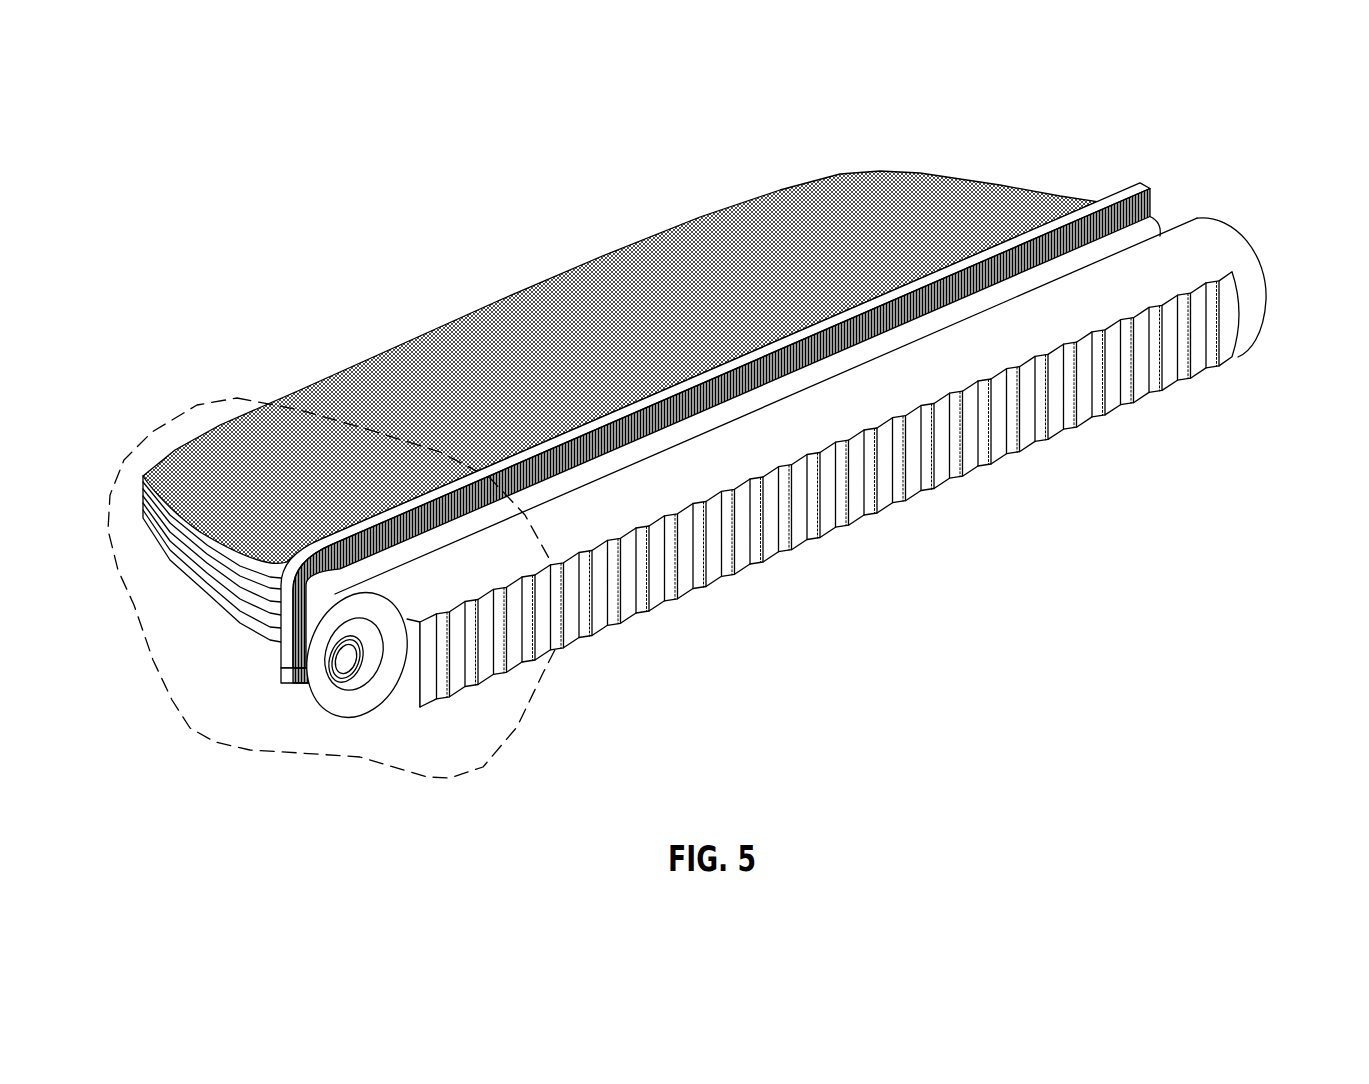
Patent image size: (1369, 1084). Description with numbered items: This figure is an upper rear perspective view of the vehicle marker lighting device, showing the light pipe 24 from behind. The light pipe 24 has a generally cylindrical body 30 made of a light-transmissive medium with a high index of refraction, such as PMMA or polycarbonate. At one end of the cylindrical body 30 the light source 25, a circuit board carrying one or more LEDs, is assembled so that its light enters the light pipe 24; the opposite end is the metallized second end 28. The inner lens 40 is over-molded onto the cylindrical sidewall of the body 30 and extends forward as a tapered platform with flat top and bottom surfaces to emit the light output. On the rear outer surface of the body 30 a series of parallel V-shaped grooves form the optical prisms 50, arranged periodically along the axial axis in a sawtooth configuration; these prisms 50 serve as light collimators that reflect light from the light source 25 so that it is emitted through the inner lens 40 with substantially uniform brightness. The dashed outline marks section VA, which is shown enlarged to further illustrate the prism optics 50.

The light pipe 24 is at (383, 232).
The light source 25 is at (347, 667).
The metallized second end 28 is at (1267, 302).
The cylindrical body 30 is at (1200, 247).
The inner lens 40 is at (947, 203).
The optical prisms 50 is at (1027, 413).
The section VA is at (118, 476).